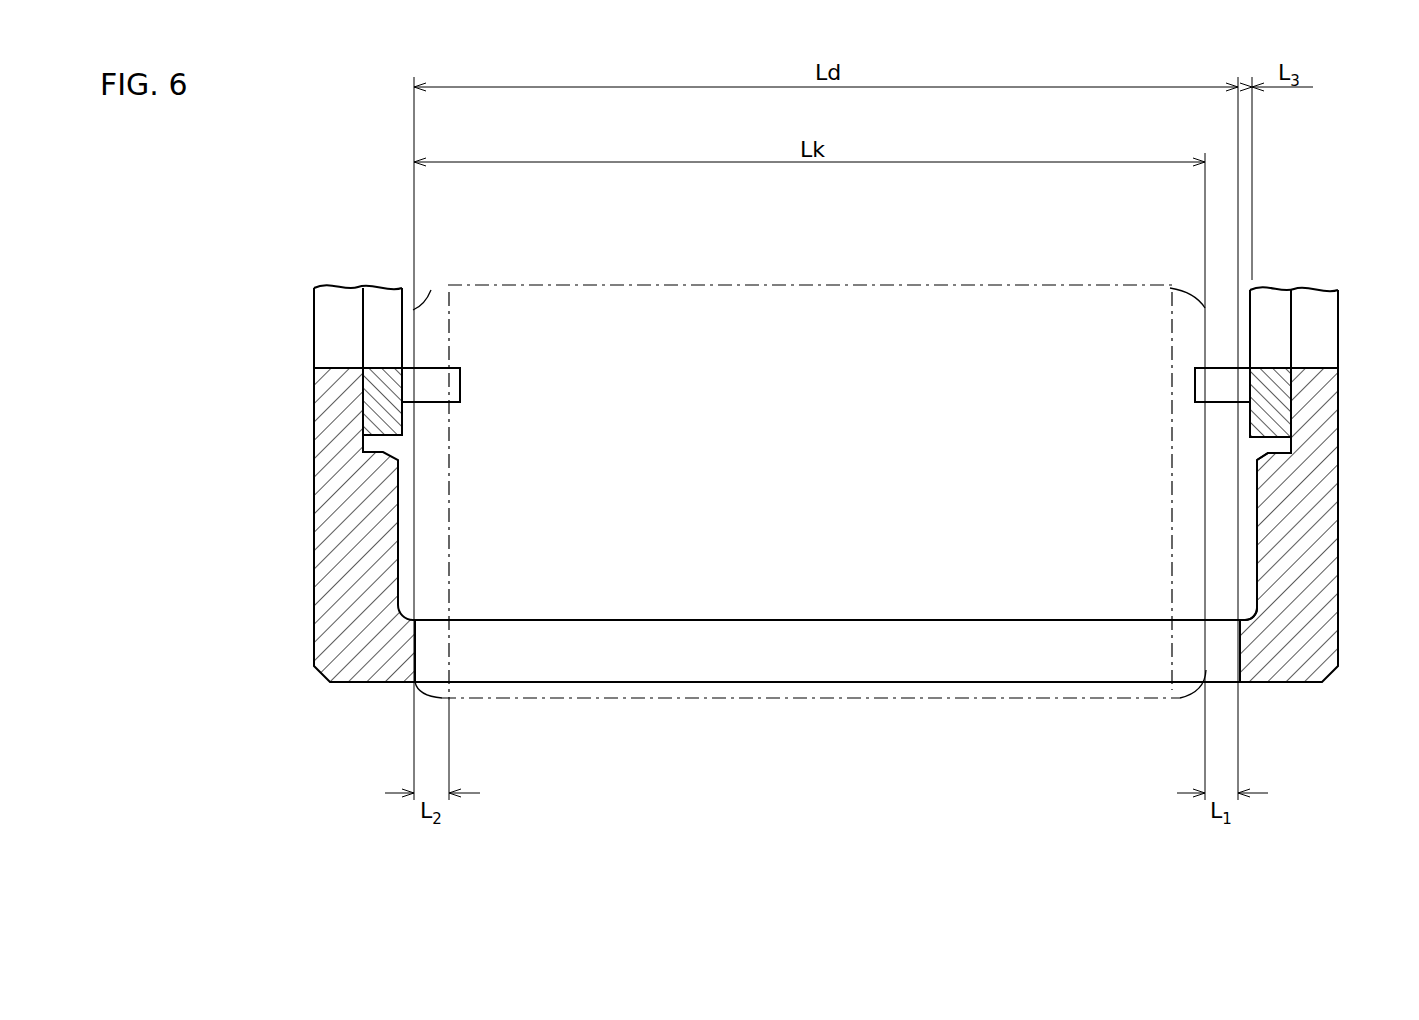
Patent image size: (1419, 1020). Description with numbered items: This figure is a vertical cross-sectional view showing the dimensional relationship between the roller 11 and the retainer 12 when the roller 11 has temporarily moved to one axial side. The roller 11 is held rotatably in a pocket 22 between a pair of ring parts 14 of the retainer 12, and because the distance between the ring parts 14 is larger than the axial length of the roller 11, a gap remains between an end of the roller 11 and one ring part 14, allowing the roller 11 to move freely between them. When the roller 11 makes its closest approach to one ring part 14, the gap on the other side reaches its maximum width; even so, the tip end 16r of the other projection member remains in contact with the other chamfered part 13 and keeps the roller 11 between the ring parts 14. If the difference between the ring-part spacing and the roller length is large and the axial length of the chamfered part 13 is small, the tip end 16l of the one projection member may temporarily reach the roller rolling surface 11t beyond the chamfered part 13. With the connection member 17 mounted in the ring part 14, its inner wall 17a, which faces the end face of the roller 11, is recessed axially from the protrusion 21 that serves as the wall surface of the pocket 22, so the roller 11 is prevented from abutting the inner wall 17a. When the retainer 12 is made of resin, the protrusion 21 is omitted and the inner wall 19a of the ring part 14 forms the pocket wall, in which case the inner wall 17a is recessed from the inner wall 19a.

The roller 11 is at (760, 702).
The roller rolling surface 11t is at (800, 284).
The retainer 12 is at (312, 503).
The chamfered part 13 is at (431, 290).
The ring part 14 is at (314, 596).
The tip end of the one projection member 16l is at (460, 383).
The tip end of the other projection member 16r is at (1193, 385).
The connection member 17 is at (378, 367).
The inner wall of the connection member 17a is at (1250, 426).
The inner wall of the ring part 19a is at (1257, 550).
The protrusion 21 is at (1235, 642).
The pocket 22 is at (891, 650).